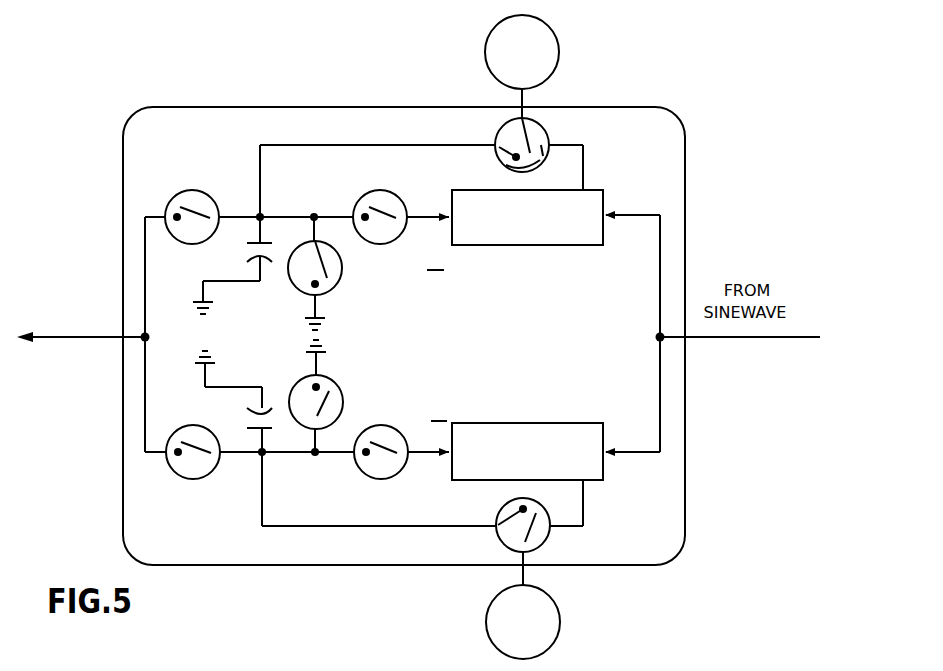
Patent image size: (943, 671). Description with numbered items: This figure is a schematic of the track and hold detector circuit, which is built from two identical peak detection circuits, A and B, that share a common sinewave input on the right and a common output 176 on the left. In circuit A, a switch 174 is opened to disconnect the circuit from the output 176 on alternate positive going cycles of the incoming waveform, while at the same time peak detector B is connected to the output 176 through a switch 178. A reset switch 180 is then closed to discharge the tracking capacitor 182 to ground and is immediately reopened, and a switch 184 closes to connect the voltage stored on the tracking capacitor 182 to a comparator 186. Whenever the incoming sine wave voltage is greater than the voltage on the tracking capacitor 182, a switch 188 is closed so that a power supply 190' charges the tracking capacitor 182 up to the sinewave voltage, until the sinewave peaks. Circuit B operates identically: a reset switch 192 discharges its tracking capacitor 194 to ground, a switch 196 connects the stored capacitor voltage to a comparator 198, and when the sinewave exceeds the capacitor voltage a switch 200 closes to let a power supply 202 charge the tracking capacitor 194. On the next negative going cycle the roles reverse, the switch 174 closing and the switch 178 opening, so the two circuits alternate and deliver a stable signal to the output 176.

The switch 174 is at (210, 191).
The output 176 is at (85, 339).
The switch 178 is at (180, 479).
The reset switch 180 is at (342, 265).
The tracking capacitor 182 is at (266, 238).
The switch 184 is at (388, 191).
The comparator 186 is at (517, 247).
The switch 188 is at (542, 125).
The power supply 190' is at (553, 52).
The reset switch 192 is at (336, 383).
The tracking capacitor 194 is at (268, 431).
The switch 196 is at (383, 479).
The comparator 198 is at (508, 423).
The switch 200 is at (552, 540).
The power supply 202 is at (563, 608).